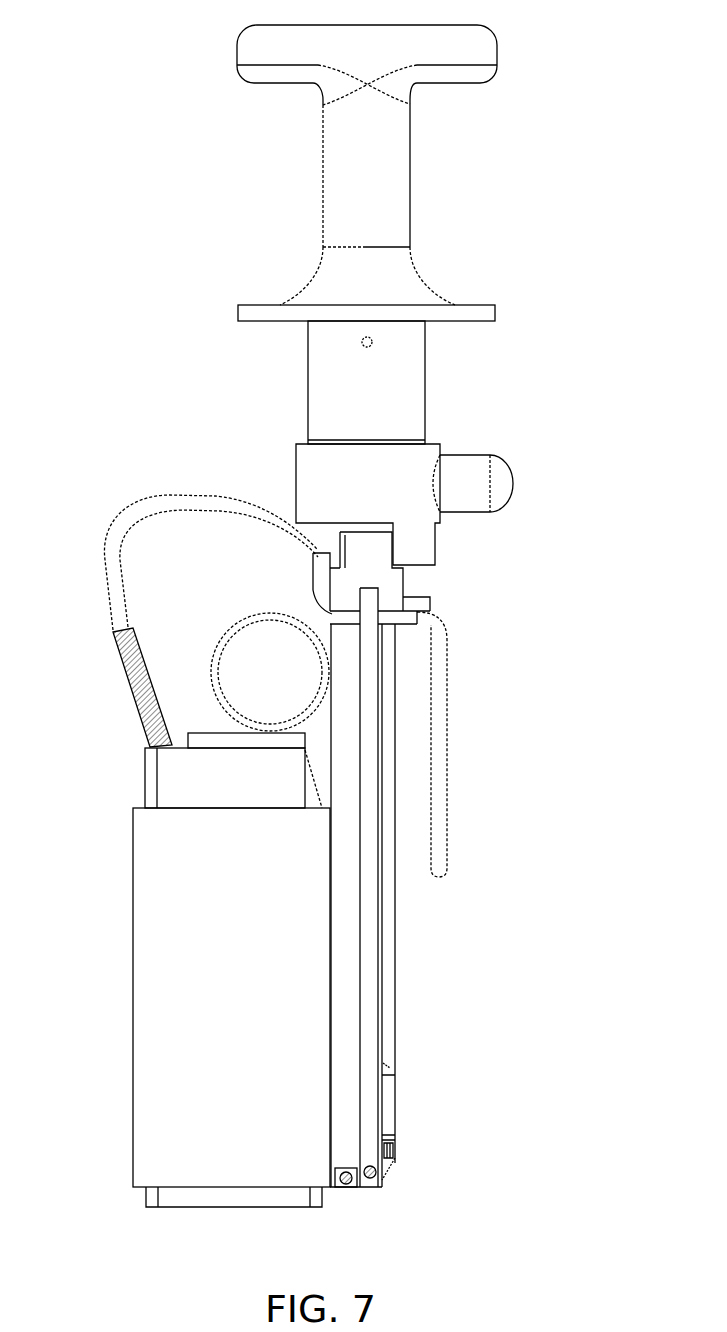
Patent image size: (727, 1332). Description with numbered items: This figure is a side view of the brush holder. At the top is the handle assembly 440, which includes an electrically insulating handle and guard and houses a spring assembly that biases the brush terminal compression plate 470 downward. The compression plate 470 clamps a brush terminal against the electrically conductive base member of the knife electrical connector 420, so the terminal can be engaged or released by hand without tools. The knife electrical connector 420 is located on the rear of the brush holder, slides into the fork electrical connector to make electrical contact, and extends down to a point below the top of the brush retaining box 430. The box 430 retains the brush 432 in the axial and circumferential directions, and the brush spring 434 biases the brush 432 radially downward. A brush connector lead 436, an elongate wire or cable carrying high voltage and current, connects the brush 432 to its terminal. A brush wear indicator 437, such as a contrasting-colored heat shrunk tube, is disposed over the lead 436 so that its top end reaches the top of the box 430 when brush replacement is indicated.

The knife electrical connector 420 is at (448, 736).
The brush retaining box 430 is at (265, 997).
The brush 432 is at (157, 778).
The brush spring 434 is at (252, 616).
The brush connector lead 436 is at (106, 537).
The brush wear indicator 437 is at (128, 675).
The handle assembly 440 is at (287, 170).
The brush terminal compression plate 470 is at (513, 480).